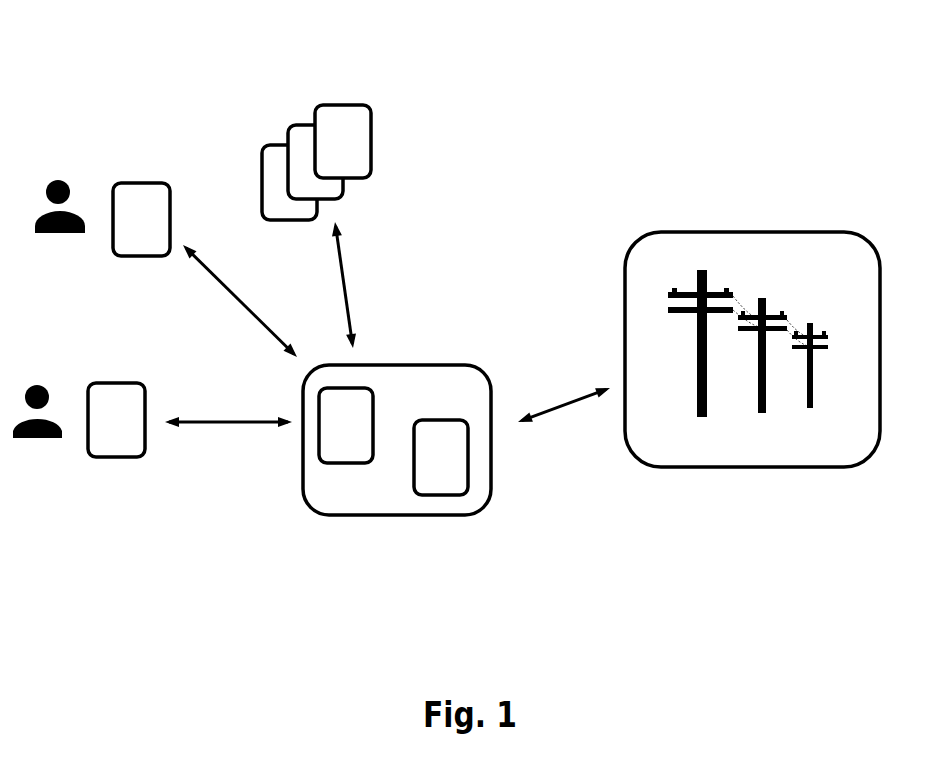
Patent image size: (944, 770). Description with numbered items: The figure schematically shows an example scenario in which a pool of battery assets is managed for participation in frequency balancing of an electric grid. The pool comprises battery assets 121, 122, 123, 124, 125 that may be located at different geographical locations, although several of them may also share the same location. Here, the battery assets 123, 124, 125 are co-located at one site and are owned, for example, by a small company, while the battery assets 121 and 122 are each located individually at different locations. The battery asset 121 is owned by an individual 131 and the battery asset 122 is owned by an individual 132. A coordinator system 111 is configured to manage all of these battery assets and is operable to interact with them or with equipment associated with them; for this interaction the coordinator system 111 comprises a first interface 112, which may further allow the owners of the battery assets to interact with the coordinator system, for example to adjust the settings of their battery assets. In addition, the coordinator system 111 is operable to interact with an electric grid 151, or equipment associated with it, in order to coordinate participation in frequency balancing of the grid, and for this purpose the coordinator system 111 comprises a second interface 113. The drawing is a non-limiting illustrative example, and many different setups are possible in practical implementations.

The coordinator system 111 is at (338, 515).
The first interface 112 is at (320, 433).
The second interface 113 is at (431, 497).
The battery asset 121 is at (103, 381).
The battery asset 122 is at (128, 181).
The battery asset 123 is at (272, 145).
The battery asset 124 is at (303, 125).
The battery asset 125 is at (353, 105).
The individual 131 is at (42, 385).
The individual 132 is at (62, 180).
The electric grid 151 is at (788, 232).